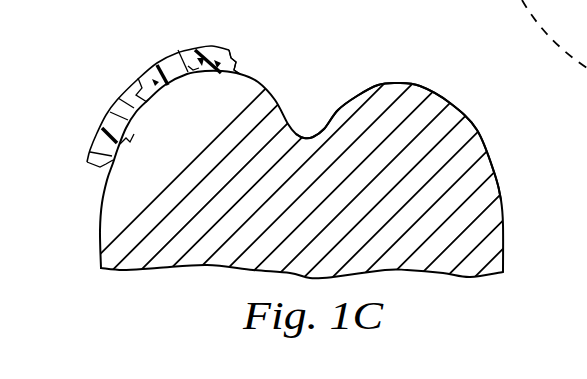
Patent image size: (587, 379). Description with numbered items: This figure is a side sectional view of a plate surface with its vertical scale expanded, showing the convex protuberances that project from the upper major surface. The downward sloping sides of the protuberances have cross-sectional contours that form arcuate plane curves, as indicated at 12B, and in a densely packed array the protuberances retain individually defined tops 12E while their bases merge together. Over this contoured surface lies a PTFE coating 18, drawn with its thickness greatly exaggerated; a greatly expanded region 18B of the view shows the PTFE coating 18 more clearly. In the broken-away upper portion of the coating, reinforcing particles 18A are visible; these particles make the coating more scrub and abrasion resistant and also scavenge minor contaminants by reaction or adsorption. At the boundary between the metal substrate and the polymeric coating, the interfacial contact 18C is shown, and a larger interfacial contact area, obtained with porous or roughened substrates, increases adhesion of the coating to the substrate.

The arcuate plane curve 12B is at (498, 180).
The individually defined top 12E is at (417, 82).
The PTFE coating 18 is at (91, 148).
The reinforcing particles 18A is at (164, 59).
The greatly expanded region 18B is at (235, 48).
The interfacial contact 18C is at (193, 70).